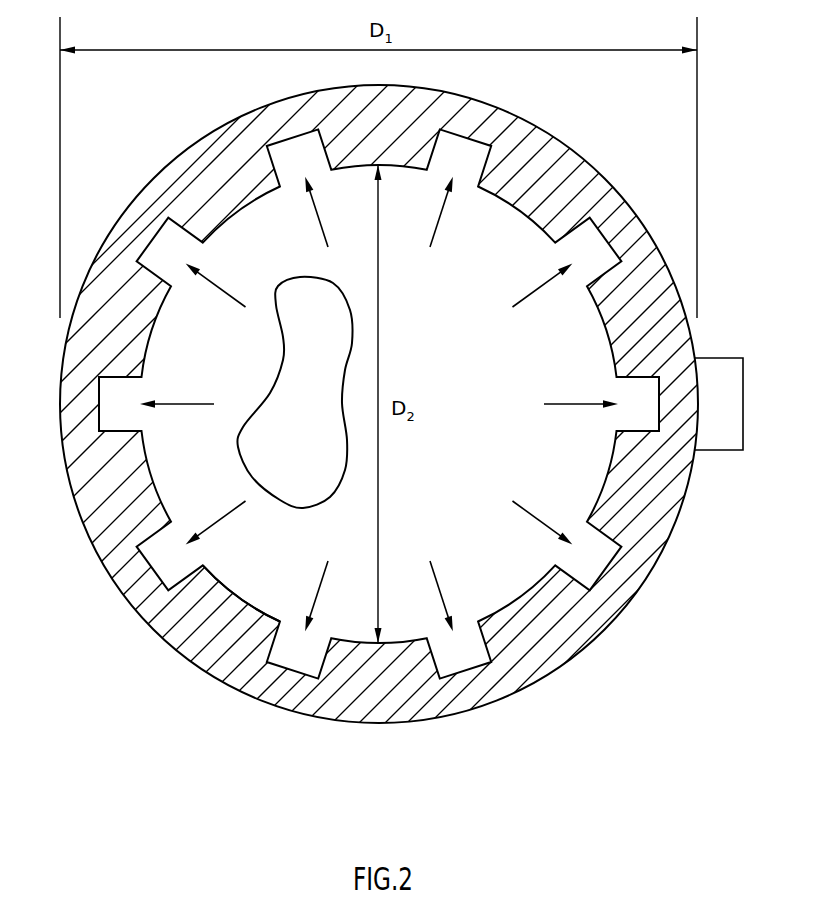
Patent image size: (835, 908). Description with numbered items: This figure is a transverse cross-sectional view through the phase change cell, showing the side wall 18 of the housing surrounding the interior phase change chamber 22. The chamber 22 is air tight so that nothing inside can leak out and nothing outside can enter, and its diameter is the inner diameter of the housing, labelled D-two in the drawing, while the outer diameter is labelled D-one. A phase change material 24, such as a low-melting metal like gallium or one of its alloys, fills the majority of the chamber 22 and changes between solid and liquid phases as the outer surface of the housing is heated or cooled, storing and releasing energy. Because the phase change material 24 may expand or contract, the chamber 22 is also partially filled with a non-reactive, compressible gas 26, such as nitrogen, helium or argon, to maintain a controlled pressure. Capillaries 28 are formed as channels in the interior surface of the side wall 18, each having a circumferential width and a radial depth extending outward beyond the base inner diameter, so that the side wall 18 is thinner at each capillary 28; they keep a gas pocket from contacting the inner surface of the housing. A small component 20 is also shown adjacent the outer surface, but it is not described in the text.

The side wall 18 is at (548, 645).
The sensor 20 is at (730, 398).
The phase change chamber 22 is at (492, 406).
The phase change material 24 is at (255, 585).
The gas 26 is at (317, 411).
The capillaries 28 is at (112, 417).